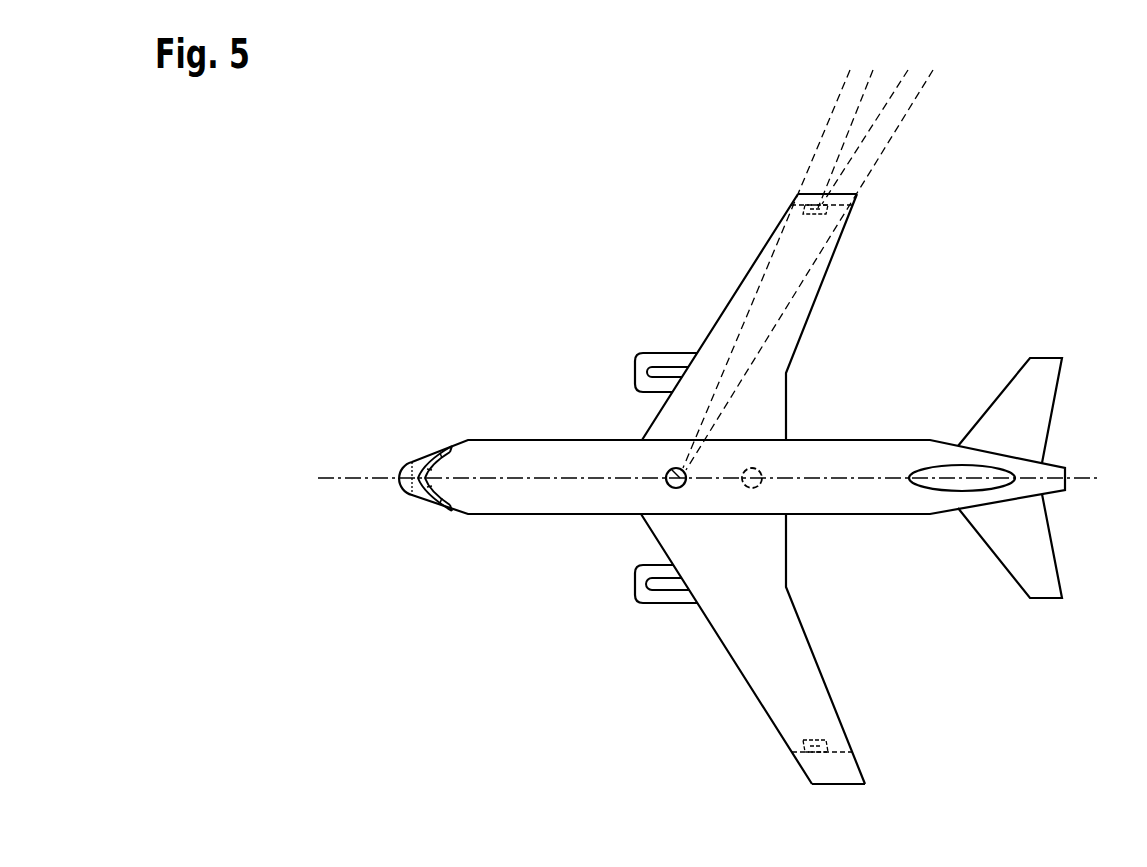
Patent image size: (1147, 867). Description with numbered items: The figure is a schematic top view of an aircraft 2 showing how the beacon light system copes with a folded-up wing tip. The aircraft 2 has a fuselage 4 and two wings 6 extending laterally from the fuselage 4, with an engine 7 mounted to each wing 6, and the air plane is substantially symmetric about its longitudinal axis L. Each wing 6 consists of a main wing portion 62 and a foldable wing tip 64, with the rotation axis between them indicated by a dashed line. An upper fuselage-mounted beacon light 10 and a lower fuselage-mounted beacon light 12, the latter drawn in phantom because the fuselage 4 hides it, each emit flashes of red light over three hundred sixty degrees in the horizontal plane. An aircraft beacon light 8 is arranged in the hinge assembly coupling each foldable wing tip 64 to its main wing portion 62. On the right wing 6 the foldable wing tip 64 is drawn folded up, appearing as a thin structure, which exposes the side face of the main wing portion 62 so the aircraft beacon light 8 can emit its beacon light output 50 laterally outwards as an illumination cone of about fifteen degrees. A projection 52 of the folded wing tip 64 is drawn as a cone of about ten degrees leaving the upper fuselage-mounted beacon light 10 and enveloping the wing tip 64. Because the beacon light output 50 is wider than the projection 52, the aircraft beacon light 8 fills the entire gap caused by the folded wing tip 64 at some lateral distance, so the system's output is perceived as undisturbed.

The aircraft 2 is at (1029, 262).
The fuselage 4 is at (866, 500).
The wing 6 is at (952, 176).
The engine 7 is at (630, 362).
The aircraft beacon light 8 is at (800, 209).
The upper fuselage-mounted beacon light 10 is at (672, 468).
The lower fuselage-mounted beacon light 12 is at (758, 470).
The beacon light output 50 is at (855, 125).
The projection 52 is at (905, 126).
The main wing portion 62 is at (836, 228).
The foldable wing tip 64 is at (858, 196).
The longitudinal axis L is at (332, 480).